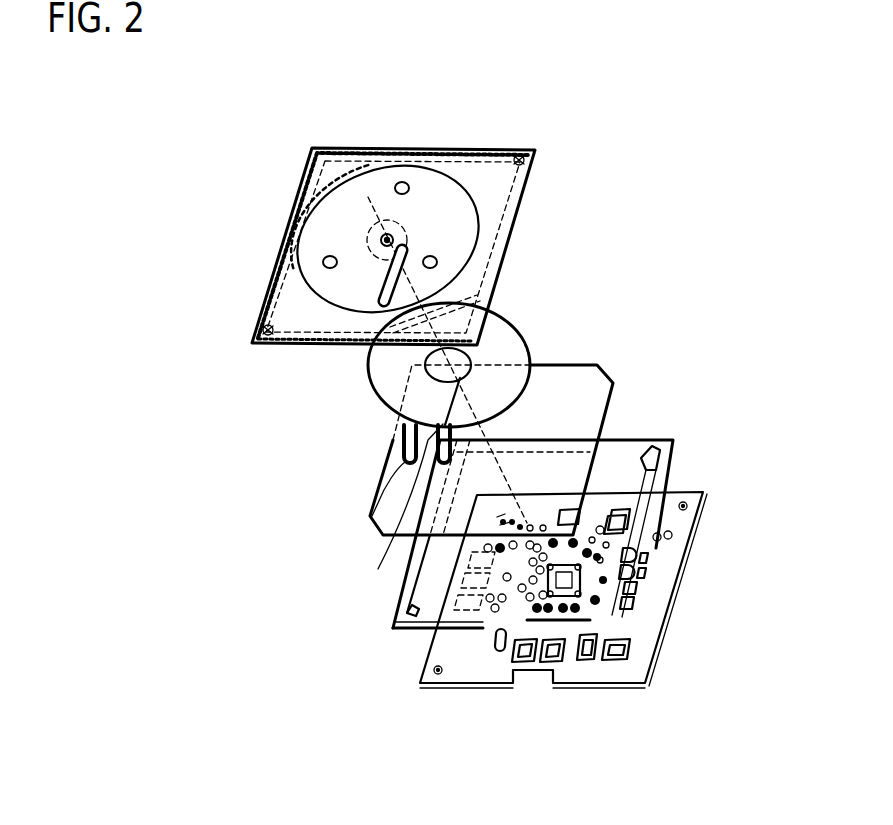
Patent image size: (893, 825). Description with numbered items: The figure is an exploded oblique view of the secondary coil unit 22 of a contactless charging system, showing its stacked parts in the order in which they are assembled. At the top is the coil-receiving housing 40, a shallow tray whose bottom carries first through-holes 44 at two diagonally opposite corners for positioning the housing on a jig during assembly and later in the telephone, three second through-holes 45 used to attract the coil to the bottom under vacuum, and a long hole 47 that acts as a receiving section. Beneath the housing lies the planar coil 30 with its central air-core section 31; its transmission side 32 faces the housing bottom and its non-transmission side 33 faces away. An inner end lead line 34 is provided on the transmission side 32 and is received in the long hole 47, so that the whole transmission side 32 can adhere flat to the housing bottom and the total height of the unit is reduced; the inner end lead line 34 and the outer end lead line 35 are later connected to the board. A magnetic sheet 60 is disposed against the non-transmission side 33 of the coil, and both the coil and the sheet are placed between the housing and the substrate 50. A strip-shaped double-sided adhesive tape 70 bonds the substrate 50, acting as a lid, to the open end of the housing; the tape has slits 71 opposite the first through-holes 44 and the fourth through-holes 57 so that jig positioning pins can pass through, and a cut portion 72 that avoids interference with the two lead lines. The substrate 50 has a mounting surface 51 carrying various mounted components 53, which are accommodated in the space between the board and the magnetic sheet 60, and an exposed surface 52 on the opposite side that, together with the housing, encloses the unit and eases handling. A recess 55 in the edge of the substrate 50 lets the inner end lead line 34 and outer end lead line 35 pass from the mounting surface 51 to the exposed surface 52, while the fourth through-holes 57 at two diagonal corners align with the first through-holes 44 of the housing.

The coil unit 22 is at (648, 153).
The planar coil 30 is at (476, 397).
The air-core section 31 is at (426, 380).
The transmission side 32 is at (510, 333).
The non-transmission side 33 is at (537, 347).
The inner end lead line 34 is at (398, 504).
The outer end lead line 35 is at (372, 518).
The coil-receiving housing 40 is at (385, 297).
The first through-holes 44 is at (525, 150).
The second through-holes 45 is at (323, 260).
The long hole 47 is at (378, 285).
The substrate 50 is at (550, 631).
The mounting surface 51 is at (665, 565).
The exposed surface 52 is at (660, 580).
The mounted components 53 is at (597, 660).
The recess 55 is at (533, 672).
The fourth through-holes 57 is at (688, 505).
The magnetic sheet 60 is at (600, 366).
The double-sided adhesive tape 70 is at (517, 507).
The slits 71 is at (673, 442).
The cut portion 72 is at (488, 636).